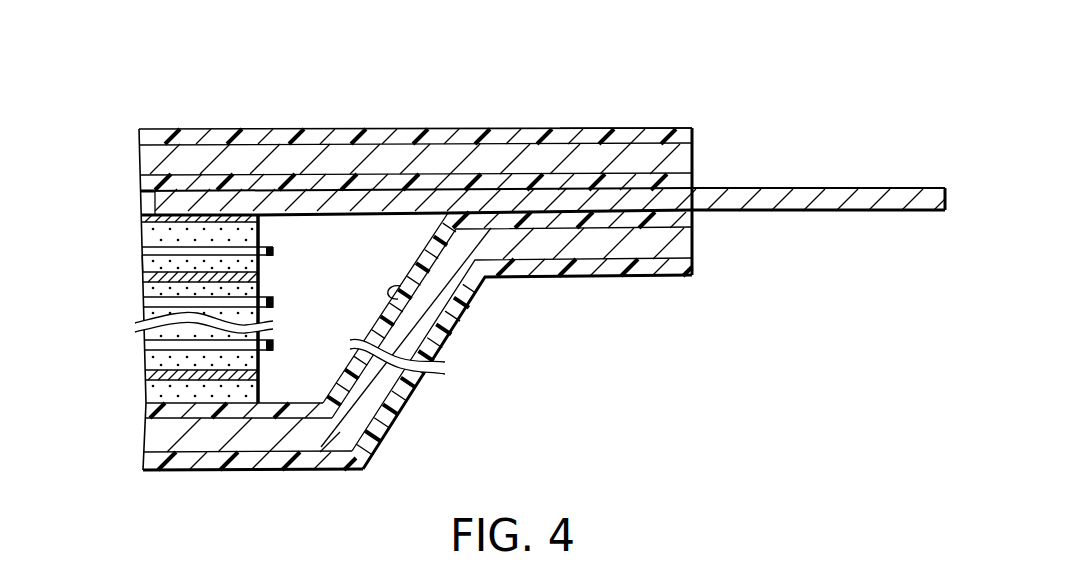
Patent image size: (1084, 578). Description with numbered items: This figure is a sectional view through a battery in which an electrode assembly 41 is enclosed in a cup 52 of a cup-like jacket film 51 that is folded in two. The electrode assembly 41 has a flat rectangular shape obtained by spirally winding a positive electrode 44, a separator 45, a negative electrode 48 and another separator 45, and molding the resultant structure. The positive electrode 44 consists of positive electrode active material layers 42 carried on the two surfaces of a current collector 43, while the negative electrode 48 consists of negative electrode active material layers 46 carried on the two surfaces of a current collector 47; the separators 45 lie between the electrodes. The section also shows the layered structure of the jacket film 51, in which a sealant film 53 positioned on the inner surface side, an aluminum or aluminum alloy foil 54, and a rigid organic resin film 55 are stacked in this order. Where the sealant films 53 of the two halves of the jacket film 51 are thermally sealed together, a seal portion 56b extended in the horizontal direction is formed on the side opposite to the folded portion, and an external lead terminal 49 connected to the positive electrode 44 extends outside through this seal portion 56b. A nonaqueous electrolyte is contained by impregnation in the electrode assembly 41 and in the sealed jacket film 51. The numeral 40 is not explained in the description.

The jacket film 51 is at (227, 121).
The seal portion 56b is at (624, 128).
The rigid organic resin film 55 is at (693, 130).
The aluminum or aluminum alloy foil 54 is at (682, 158).
The sealant film 53 is at (692, 180).
The external lead terminal 49 is at (872, 188).
The positive electrode 44 is at (162, 190).
The terminal 40 is at (145, 200).
The current collector 43 is at (141, 217).
The positive electrode active material layer 42 is at (181, 229).
The separator 45 is at (143, 253).
The electrode assembly 41 is at (268, 284).
The negative electrode 48 is at (155, 331).
The negative electrode active material layer 46 is at (147, 267).
The current collector 47 is at (146, 298).
The cup 52 is at (458, 326).